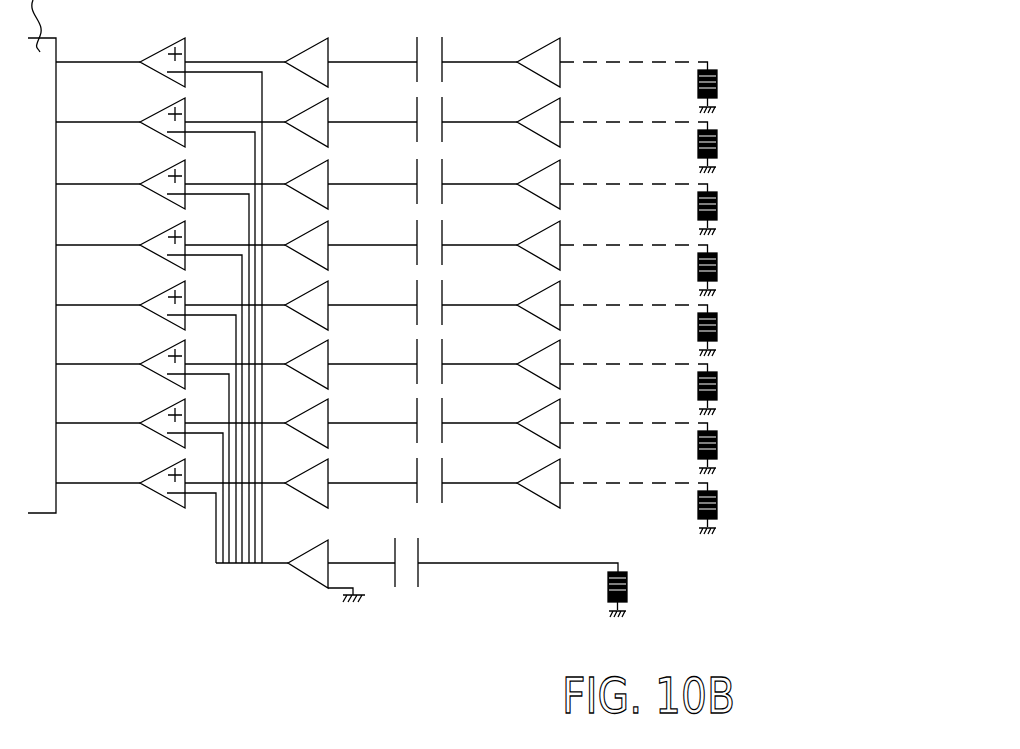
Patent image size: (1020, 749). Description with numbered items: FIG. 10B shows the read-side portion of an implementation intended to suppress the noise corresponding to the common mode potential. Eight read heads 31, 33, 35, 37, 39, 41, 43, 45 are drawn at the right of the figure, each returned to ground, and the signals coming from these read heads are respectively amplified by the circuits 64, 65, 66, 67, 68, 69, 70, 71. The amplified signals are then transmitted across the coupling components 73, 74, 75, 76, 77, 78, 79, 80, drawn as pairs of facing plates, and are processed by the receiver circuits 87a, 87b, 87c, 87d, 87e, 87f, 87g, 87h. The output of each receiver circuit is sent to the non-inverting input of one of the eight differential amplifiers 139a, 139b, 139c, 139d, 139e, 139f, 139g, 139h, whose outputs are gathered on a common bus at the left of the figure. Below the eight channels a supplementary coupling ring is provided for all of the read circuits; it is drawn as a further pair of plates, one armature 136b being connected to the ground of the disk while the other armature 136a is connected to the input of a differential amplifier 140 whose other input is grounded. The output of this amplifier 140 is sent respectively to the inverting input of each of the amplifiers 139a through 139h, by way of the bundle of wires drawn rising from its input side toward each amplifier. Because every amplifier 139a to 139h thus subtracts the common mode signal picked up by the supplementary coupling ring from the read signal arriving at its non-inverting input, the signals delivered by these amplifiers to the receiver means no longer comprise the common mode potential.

The differential amplifier 139a is at (120, 52).
The differential amplifier 139b is at (120, 112).
The differential amplifier 139c is at (120, 174).
The differential amplifier 139d is at (120, 235).
The differential amplifier 139e is at (120, 295).
The differential amplifier 139f is at (120, 354).
The differential amplifier 139g is at (120, 413).
The differential amplifier 139h is at (120, 471).
The receiver circuit 87a is at (347, 53).
The receiver circuit 87b is at (347, 113).
The receiver circuit 87c is at (347, 175).
The receiver circuit 87d is at (347, 236).
The receiver circuit 87e is at (347, 296).
The receiver circuit 87f is at (346, 355).
The receiver circuit 87g is at (347, 414).
The receiver circuit 87h is at (347, 474).
The coupling component 73 is at (460, 47).
The coupling component 74 is at (460, 107).
The coupling component 75 is at (460, 169).
The coupling component 76 is at (460, 230).
The coupling component 77 is at (460, 290).
The coupling component 78 is at (460, 349).
The coupling component 79 is at (460, 408).
The coupling component 80 is at (459, 469).
The amplifier circuit 64 is at (569, 52).
The amplifier circuit 65 is at (569, 112).
The amplifier circuit 66 is at (569, 174).
The amplifier circuit 67 is at (569, 235).
The amplifier circuit 68 is at (569, 295).
The amplifier circuit 69 is at (569, 354).
The amplifier circuit 70 is at (569, 413).
The amplifier circuit 71 is at (569, 471).
The read head 31 is at (668, 79).
The read head 33 is at (668, 139).
The read head 35 is at (668, 200).
The read head 37 is at (668, 261).
The read head 39 is at (668, 321).
The read head 41 is at (668, 380).
The read head 43 is at (669, 439).
The read head 45 is at (669, 499).
The differential amplifier 140 is at (309, 551).
The armature 136a is at (394, 547).
The armature 136b is at (420, 553).